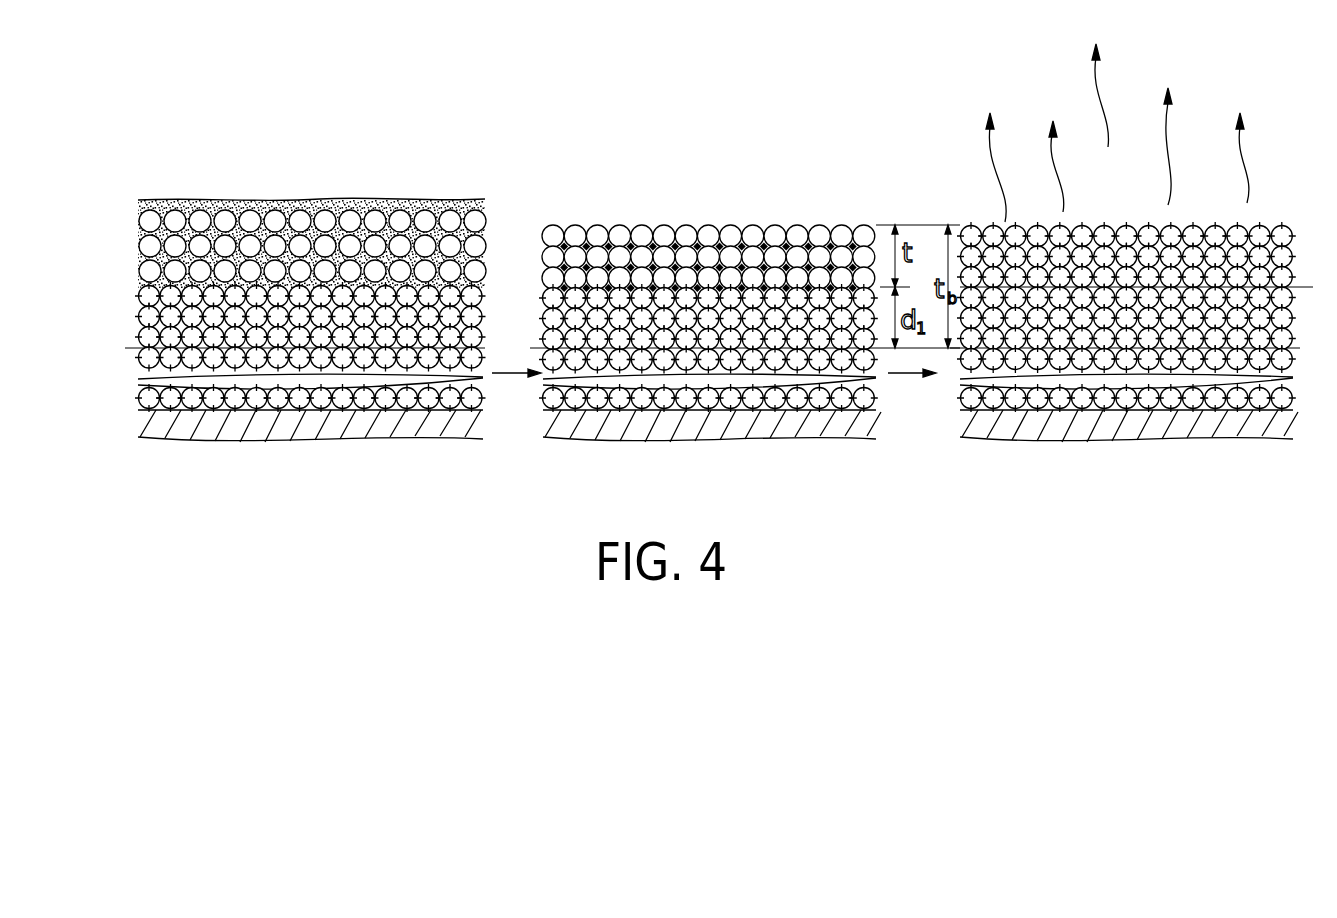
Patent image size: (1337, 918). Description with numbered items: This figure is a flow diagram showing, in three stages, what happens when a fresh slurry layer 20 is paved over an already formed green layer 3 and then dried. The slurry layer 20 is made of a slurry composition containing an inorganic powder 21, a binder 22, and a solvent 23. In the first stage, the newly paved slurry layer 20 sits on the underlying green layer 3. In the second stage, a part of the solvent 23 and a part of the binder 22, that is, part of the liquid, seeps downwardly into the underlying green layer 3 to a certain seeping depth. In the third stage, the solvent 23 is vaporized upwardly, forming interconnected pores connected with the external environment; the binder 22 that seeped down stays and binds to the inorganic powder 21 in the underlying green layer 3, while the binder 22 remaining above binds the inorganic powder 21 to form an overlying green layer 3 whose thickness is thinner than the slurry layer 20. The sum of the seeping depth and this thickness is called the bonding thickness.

The slurry layer 20 is at (57, 155).
The inorganic powder 21 is at (148, 246).
The binder 22 is at (156, 200).
The solvent 23 is at (200, 199).
The green layer 3 is at (62, 293).